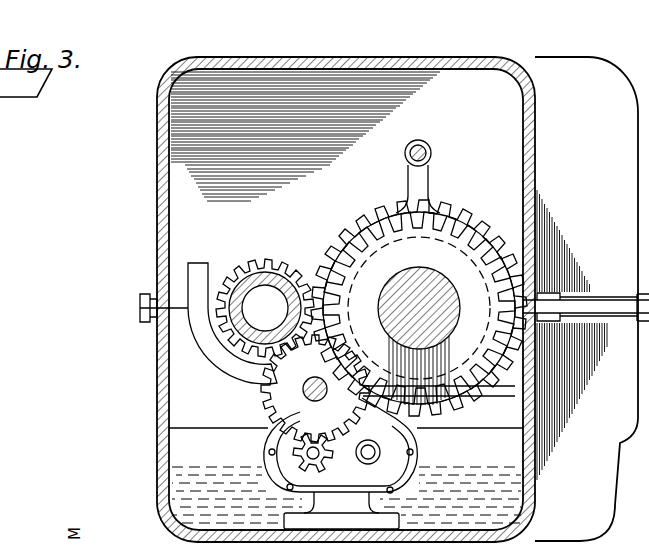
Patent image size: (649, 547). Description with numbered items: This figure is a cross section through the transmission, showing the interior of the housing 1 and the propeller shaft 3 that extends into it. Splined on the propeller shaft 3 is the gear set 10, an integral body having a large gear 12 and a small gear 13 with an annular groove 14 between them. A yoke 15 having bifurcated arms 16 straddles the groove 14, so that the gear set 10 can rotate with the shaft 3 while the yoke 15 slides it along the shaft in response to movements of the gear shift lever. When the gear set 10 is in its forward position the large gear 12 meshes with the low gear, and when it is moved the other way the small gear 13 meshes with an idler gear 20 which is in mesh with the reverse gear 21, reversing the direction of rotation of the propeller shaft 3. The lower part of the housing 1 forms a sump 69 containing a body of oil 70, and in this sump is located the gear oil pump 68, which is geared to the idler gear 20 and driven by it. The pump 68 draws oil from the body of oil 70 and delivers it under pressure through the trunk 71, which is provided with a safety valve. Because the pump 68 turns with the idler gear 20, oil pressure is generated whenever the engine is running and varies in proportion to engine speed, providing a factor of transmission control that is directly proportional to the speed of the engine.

The housing 1 is at (407, 57).
The propeller shaft 3 is at (419, 281).
The gear set 10 is at (370, 212).
The large gear 12 is at (354, 232).
The small gear 13 is at (447, 250).
The annular groove 14 is at (446, 198).
The yoke 15 is at (433, 162).
The bifurcated arms 16 is at (330, 262).
The idler gear 20 is at (283, 406).
The reverse gear 21 is at (252, 260).
The gear oil pump 68 is at (395, 447).
The sump 69 is at (507, 450).
The body of oil 70 is at (510, 497).
The trunk 71 is at (218, 353).